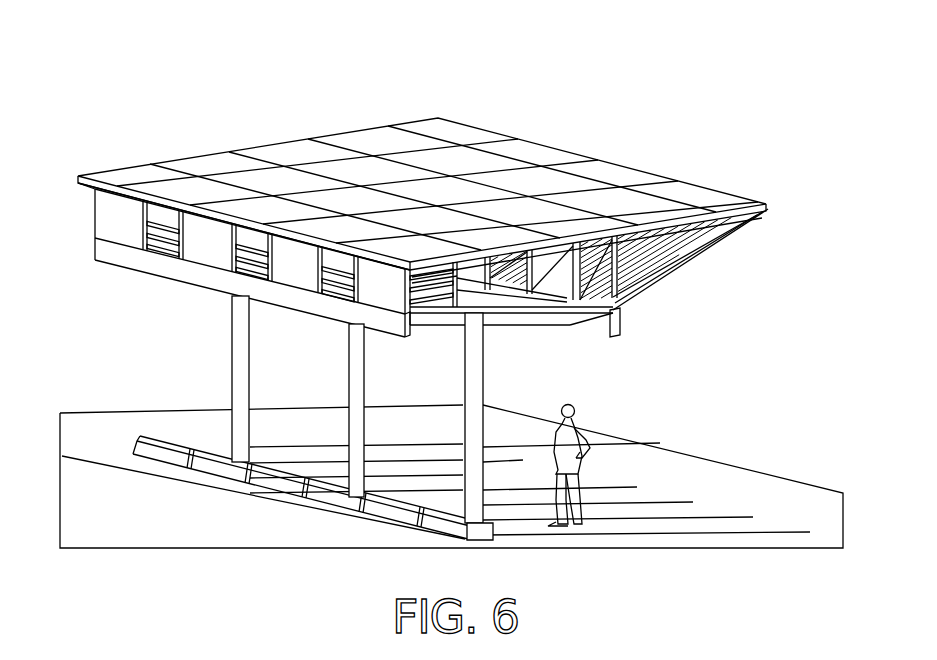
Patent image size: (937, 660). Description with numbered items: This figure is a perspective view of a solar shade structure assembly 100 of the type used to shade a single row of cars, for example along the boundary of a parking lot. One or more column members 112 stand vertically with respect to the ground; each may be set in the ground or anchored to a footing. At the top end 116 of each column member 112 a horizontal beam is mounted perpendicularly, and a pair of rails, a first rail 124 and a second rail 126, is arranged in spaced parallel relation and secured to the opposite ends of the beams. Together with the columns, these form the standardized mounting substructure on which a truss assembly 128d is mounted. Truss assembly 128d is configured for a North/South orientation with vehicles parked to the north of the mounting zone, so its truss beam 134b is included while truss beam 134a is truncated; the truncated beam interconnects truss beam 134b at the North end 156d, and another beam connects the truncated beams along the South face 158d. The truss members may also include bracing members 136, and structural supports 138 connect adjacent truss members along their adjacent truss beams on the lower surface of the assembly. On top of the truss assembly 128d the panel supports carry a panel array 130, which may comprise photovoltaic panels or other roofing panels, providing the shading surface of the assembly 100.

The modular shade structure assembly 100 is at (160, 106).
The column member 112 is at (232, 381).
The top end 116 is at (543, 327).
The first rail 124 is at (607, 340).
The second rail 126 is at (293, 302).
The truss assembly 128d is at (690, 275).
The panel array 130 is at (640, 180).
The truss beam 134a is at (506, 310).
The truss beam 134b is at (707, 242).
The bracing member 136 is at (445, 270).
The structural support 138 is at (652, 275).
The North end 156d is at (745, 217).
The South face 158d is at (100, 229).